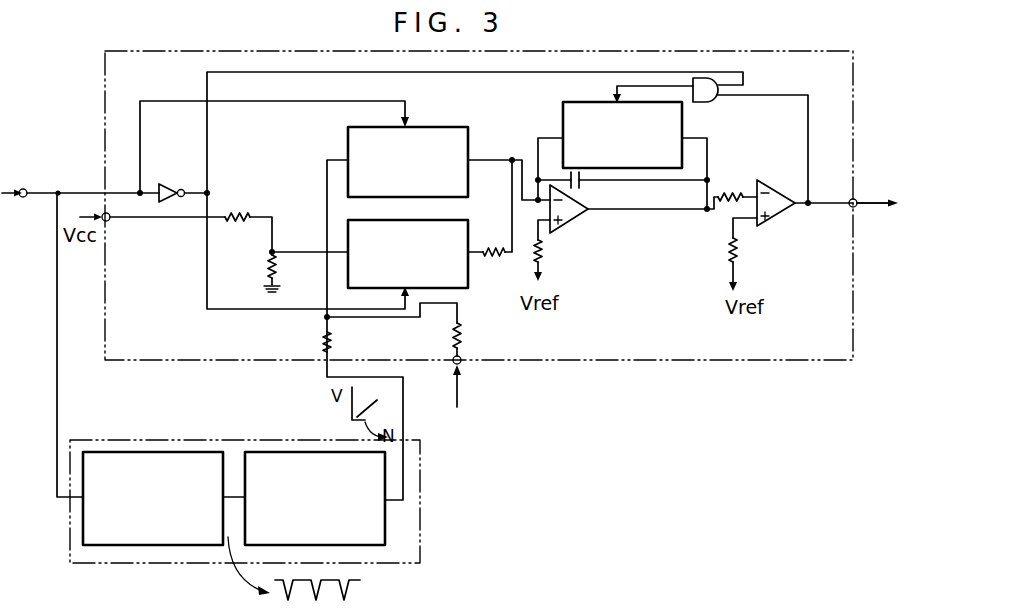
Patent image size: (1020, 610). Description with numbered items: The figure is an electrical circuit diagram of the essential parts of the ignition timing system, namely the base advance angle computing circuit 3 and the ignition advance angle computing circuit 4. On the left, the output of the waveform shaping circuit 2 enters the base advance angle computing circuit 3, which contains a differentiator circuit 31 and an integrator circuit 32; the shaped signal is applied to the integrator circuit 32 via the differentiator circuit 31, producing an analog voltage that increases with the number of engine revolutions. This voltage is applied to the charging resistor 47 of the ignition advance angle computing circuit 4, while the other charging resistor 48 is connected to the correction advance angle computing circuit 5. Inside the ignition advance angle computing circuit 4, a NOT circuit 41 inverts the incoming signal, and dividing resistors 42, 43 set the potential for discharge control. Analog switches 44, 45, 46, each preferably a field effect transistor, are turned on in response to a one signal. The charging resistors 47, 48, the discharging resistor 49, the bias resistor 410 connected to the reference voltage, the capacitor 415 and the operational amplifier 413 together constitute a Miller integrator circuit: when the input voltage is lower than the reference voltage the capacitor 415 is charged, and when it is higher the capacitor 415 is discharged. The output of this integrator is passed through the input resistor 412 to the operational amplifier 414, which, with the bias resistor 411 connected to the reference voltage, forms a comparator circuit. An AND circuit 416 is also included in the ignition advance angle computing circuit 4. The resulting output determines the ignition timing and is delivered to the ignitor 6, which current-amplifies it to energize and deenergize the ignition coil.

The waveform shaping circuit 2 is at (13, 179).
The base advance angle computing circuit 3 is at (253, 378).
The ignition advance angle computing circuit 4 is at (853, 100).
The correction advance angle computing circuit 5 is at (461, 364).
The ignitor 6 is at (909, 207).
The differentiator circuit 31 is at (175, 452).
The integrator circuit 32 is at (285, 452).
The NOT circuit 41 is at (167, 183).
The dividing resistor 42 is at (240, 214).
The dividing resistor 43 is at (265, 268).
The analog switch 44 is at (431, 125).
The analog switch 45 is at (471, 284).
The analog switch 46 is at (565, 103).
The charging resistor 47 is at (322, 347).
The charging resistor 48 is at (452, 340).
The discharging resistor 49 is at (486, 258).
The bias resistor 410 is at (544, 254).
The bias resistor 411 is at (741, 256).
The input resistor 412 is at (740, 192).
The operational amplifier 413 is at (570, 232).
The operational amplifier 414 is at (788, 211).
The capacitor 415 is at (583, 189).
The AND circuit 416 is at (706, 103).